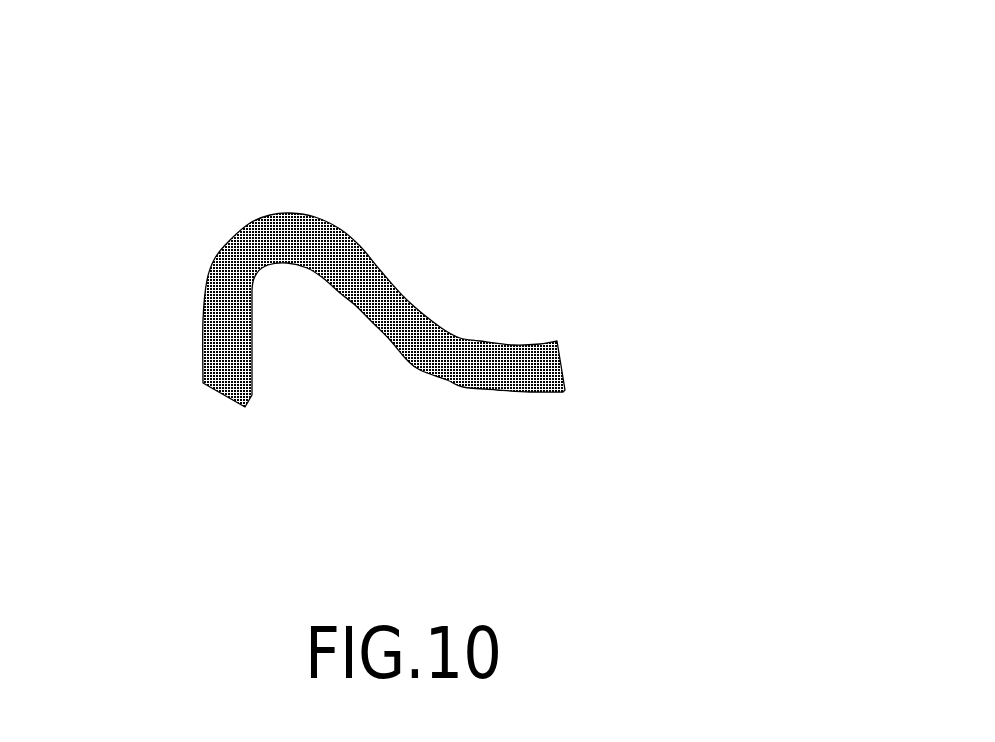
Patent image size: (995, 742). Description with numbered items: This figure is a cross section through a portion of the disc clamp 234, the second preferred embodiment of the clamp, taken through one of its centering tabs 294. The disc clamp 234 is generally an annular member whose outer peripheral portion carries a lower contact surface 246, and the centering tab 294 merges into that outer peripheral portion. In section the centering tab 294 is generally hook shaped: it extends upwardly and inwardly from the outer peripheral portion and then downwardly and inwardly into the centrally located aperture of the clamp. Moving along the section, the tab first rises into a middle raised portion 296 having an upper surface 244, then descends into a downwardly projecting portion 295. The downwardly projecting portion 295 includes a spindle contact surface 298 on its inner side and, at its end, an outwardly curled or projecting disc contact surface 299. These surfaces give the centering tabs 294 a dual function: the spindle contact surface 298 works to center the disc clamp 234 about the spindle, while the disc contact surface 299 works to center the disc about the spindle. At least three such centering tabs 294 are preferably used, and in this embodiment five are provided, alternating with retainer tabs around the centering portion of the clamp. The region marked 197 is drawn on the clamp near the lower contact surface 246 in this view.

The disc clamp 234 is at (613, 120).
The centering tab 294 is at (252, 211).
The downwardly projecting portion 295 is at (207, 275).
The upper surface 244 is at (297, 213).
The middle raised portion 296 is at (327, 247).
The spindle contact surface 298 is at (207, 352).
The disc contact surface 299 is at (253, 380).
The distal end portion 197 is at (553, 328).
The lower contact surface 246 is at (537, 397).